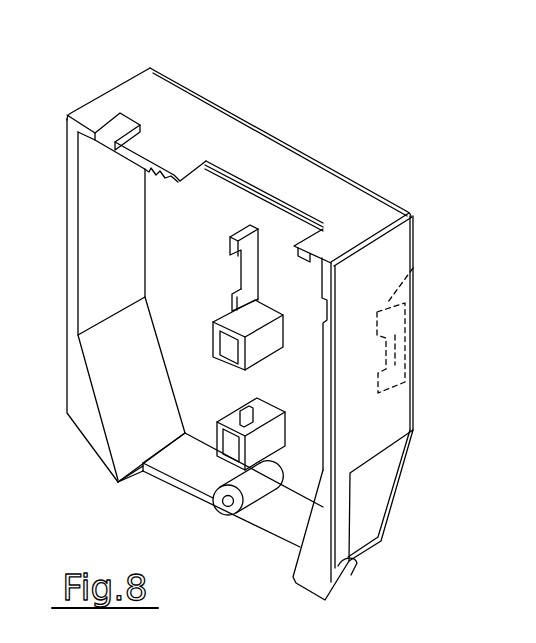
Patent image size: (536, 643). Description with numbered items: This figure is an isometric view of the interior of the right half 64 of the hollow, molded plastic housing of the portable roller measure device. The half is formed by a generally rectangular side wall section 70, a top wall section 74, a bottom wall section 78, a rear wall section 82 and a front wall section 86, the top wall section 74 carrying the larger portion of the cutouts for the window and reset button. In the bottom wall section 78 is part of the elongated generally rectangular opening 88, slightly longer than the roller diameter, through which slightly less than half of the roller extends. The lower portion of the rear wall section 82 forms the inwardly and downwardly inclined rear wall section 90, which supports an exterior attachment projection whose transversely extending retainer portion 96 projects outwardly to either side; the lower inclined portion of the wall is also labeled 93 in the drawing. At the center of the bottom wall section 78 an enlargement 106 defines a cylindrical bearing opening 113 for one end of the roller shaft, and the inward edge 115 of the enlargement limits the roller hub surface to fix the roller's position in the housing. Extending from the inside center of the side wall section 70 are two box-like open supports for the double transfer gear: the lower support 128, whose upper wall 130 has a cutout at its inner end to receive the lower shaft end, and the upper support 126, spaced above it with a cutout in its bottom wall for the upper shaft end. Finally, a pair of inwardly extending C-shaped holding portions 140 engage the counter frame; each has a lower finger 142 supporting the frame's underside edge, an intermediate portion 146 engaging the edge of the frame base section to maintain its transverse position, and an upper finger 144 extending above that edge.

The right half 64 is at (243, 78).
The side wall section 70 is at (212, 207).
The top wall section 74 is at (187, 107).
The bottom wall section 78 is at (167, 458).
The rear wall section 82 is at (392, 407).
The front wall section 86 is at (90, 210).
The opening 88 is at (282, 560).
The inclined rear wall section 90 is at (385, 487).
The angled lower face of left wall 93 is at (100, 358).
The retainer portion 96 is at (75, 443).
The enlargement 106 is at (257, 493).
The bearing opening 113 is at (232, 507).
The inward edge 115 is at (188, 490).
The upper support 126 is at (213, 338).
The lower support 128 is at (230, 414).
The upper wall 130 is at (257, 401).
The C-shaped holding portion 140 is at (246, 224).
The lower finger 142 is at (232, 303).
The upper finger 144 is at (233, 247).
The intermediate portion 146 is at (255, 262).